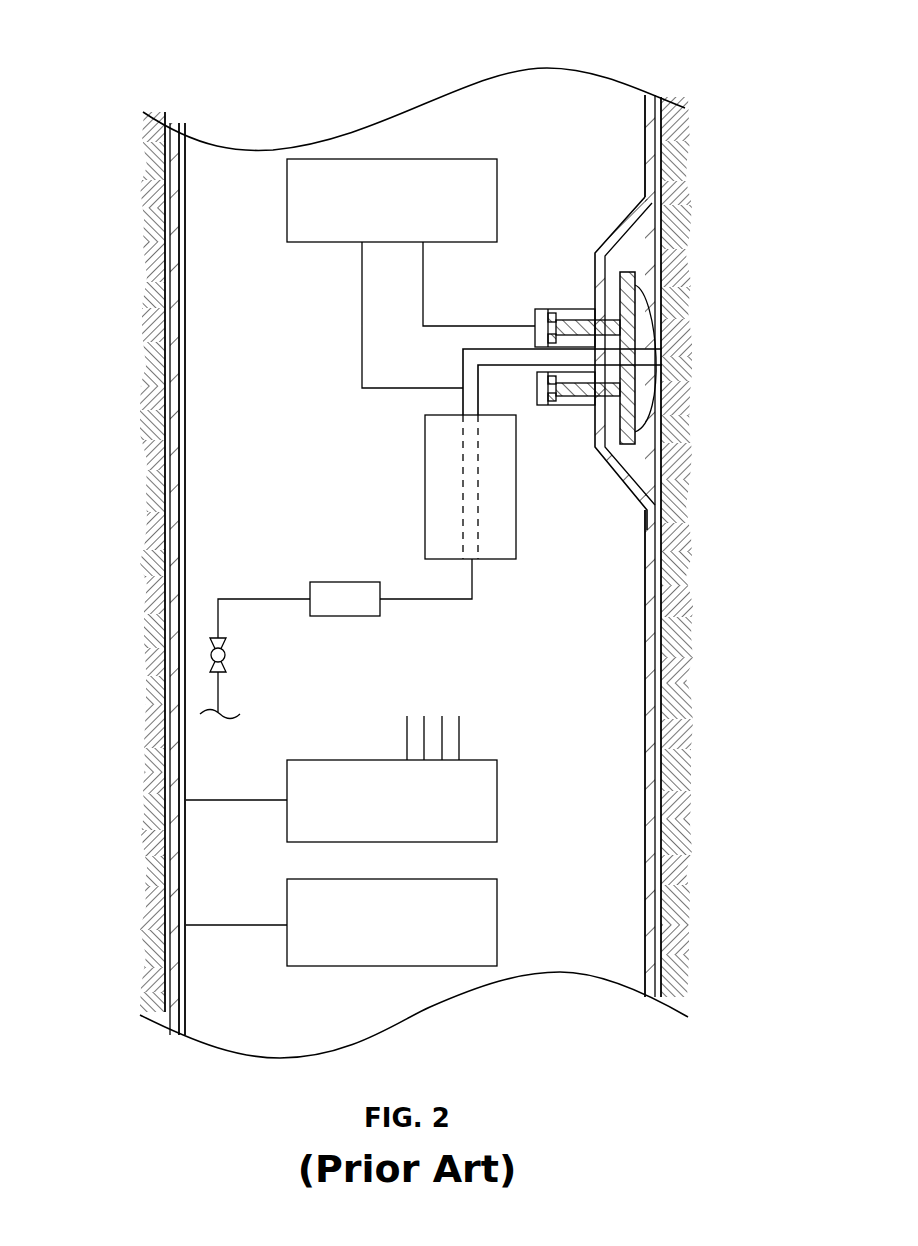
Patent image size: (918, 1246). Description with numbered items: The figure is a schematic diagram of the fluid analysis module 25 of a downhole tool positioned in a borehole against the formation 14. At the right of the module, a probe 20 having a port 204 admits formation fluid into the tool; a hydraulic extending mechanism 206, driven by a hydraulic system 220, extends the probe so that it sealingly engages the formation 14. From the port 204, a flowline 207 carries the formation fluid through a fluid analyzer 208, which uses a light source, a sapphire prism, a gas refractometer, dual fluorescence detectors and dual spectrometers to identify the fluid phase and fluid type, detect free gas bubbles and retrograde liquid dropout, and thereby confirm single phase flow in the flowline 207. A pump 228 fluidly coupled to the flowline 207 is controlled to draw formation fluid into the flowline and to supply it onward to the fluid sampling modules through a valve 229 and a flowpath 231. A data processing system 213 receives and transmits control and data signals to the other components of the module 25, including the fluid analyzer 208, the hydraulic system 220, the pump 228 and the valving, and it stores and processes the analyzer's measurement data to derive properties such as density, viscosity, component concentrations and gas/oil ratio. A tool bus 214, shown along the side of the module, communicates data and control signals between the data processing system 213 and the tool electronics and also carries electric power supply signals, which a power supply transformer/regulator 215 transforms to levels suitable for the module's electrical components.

The fluid analysis module 25 is at (655, 45).
The probe 20 is at (636, 257).
The hydraulic extending mechanism 206 is at (559, 288).
The flowline 207 is at (507, 366).
The port 204 is at (665, 352).
The formation 14 is at (665, 502).
The tool bus 214 is at (153, 290).
The fluid analyzer 208 is at (497, 560).
The data processing system 213 is at (497, 800).
The power supply transformer/regulator 215 is at (497, 925).
The hydraulic system 220 is at (341, 245).
The pump 228 is at (343, 582).
The valve 229 is at (227, 654).
The flowpath 231 is at (222, 700).